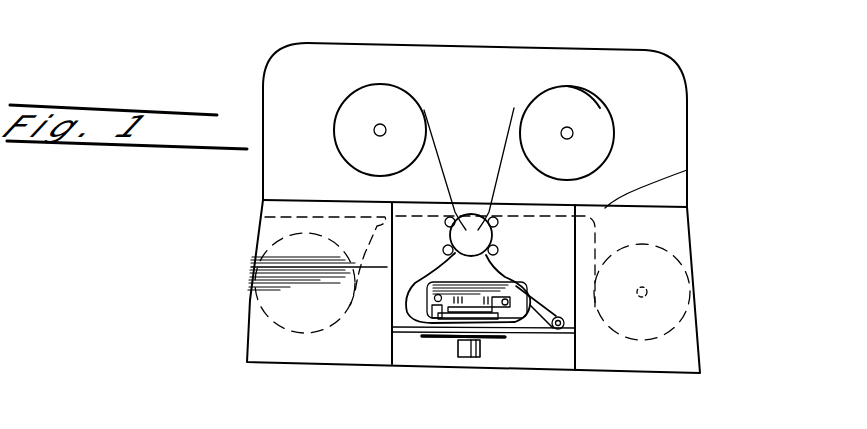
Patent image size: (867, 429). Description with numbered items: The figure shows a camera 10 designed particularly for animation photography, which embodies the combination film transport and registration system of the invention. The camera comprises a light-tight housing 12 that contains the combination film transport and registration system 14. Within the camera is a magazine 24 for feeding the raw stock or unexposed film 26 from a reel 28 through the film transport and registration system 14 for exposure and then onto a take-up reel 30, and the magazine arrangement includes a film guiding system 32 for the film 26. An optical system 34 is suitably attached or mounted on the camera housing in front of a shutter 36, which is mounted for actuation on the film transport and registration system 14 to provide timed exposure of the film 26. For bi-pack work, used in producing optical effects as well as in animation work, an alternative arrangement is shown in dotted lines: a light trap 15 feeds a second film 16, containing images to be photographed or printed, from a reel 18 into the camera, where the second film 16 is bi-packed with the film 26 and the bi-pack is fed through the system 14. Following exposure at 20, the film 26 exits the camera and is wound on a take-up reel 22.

The camera 10 is at (687, 108).
The light-tight housing 12 is at (688, 213).
The film transport and registration system 14 is at (538, 282).
The light trap 15 is at (687, 170).
The second film 16 is at (258, 217).
The reel 18 is at (262, 306).
The exposure 20 is at (487, 340).
The take-up reel 22 is at (683, 314).
The magazine 24 is at (567, 96).
The film 26 is at (507, 162).
The reel 28 is at (367, 88).
The take-up reel 30 is at (600, 108).
The film guiding system 32 is at (457, 212).
The optical system 34 is at (470, 358).
The shutter 36 is at (435, 338).